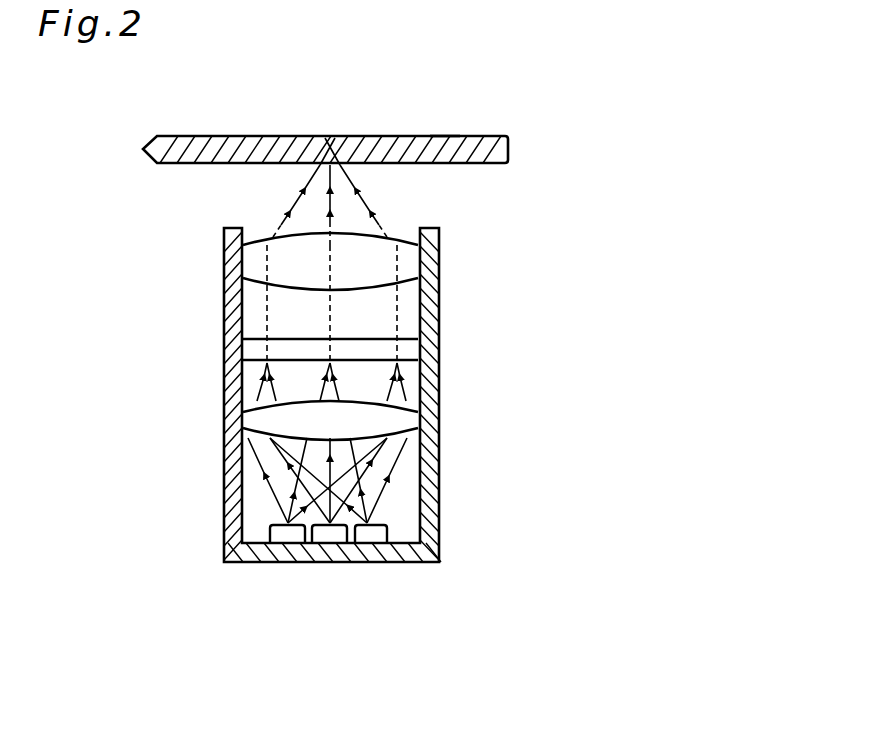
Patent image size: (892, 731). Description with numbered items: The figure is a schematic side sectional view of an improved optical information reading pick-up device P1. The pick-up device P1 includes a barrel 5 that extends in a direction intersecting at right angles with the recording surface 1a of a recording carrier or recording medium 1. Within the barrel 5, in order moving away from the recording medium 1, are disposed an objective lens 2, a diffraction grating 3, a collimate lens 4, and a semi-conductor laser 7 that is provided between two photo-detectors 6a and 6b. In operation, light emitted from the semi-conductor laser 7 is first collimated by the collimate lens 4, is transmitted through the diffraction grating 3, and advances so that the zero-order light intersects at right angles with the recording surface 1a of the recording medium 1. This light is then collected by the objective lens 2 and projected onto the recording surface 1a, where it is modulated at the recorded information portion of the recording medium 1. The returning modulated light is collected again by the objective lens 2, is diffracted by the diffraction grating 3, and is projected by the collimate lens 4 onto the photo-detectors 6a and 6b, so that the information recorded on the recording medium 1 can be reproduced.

The recording medium 1 is at (510, 150).
The recording surface 1a is at (443, 136).
The objective lens 2 is at (407, 262).
The diffraction grating 3 is at (407, 348).
The collimate lens 4 is at (407, 412).
The barrel 5 is at (428, 507).
The photo-detector 6a is at (375, 537).
The photo-detector 6b is at (288, 533).
The semi-conductor laser 7 is at (332, 540).
The pick-up device P1 is at (672, 208).